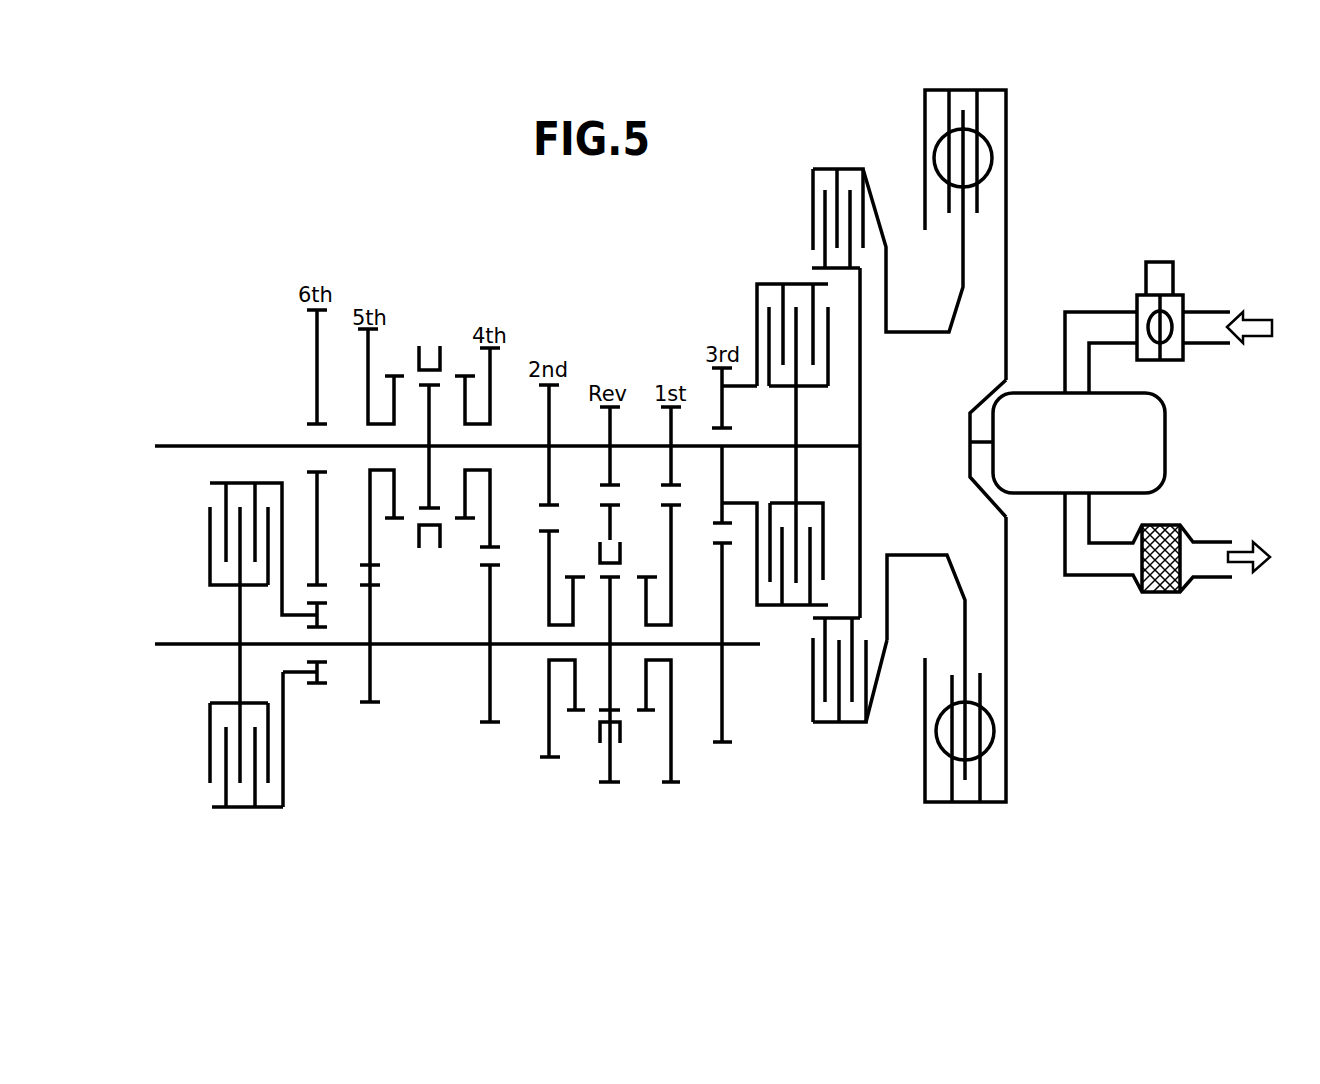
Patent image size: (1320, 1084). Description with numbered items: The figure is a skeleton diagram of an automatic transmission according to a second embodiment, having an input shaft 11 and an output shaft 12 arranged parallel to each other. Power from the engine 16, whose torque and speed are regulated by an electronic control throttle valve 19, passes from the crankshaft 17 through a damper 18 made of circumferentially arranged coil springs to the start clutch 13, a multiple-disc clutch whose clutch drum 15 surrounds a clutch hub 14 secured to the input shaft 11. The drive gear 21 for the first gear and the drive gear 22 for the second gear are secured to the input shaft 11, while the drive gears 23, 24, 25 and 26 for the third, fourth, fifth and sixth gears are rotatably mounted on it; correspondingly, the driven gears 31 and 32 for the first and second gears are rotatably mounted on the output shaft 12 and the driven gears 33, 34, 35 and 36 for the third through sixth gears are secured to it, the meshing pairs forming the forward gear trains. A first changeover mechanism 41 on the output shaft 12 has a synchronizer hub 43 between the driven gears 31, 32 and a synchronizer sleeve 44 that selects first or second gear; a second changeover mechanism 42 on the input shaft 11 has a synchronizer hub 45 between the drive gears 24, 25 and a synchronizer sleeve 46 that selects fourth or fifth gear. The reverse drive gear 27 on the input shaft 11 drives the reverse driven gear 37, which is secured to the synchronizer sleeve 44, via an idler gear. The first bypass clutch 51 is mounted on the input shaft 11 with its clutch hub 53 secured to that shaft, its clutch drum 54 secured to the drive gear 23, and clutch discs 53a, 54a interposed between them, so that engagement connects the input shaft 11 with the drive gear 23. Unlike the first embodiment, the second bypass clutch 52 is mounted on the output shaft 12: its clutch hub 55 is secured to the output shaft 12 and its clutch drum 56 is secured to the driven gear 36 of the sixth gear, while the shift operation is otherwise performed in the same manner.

The input shaft 11 is at (210, 445).
The output shaft 12 is at (178, 648).
The start clutch 13 is at (807, 157).
The clutch hub 14 is at (861, 356).
The clutch drum 15 is at (843, 167).
The engine 16 is at (1165, 443).
The crankshaft 17 is at (985, 445).
The damper 18 is at (993, 731).
The electronic control throttle valve 19 is at (1184, 268).
The drive gear for the first gear 21 is at (671, 405).
The drive gear for the second gear 22 is at (549, 383).
The drive gear for the third gear 23 is at (722, 366).
The drive gear for the fourth gear 24 is at (489, 347).
The drive gear for the fifth gear 25 is at (386, 327).
The drive gear for the sixth gear 26 is at (317, 340).
The reverse drive gear 27 is at (612, 405).
The driven gear for the first gear 31 is at (670, 787).
The driven gear for the second gear 32 is at (545, 760).
The driven gear for the third gear 33 is at (720, 747).
The driven gear for the fourth gear 34 is at (490, 725).
The driven gear for the fifth gear 35 is at (370, 705).
The driven gear for the sixth gear 36 is at (317, 686).
The reverse driven gear 37 is at (605, 787).
The first changeover mechanism 41 is at (600, 733).
The second changeover mechanism 42 is at (428, 556).
The synchronizer hub 43 is at (615, 692).
The synchronizer sleeve 44 is at (597, 758).
The synchronizer hub 45 is at (433, 485).
The synchronizer sleeve 46 is at (429, 345).
The first bypass clutch 51 is at (815, 388).
The second bypass clutch 52 is at (232, 824).
The clutch hub 53 is at (777, 387).
The clutch discs 53a is at (828, 526).
The clutch drum 54 is at (758, 282).
The clutch discs 54a is at (815, 296).
The clutch hub 55 is at (220, 588).
The clutch drum 56 is at (215, 483).